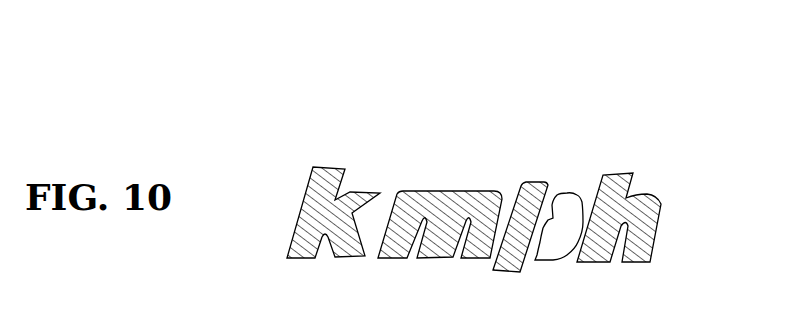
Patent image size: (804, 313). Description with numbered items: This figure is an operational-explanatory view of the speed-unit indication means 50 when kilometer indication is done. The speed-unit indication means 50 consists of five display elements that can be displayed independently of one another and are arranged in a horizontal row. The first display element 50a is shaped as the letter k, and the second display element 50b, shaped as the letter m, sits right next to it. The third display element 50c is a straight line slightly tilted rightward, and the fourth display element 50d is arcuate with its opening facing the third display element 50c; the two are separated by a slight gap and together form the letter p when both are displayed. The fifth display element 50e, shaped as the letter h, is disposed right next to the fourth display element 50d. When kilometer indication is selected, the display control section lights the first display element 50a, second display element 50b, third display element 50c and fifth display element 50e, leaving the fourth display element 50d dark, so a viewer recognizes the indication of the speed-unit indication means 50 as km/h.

The speed-unit indication means 50 is at (309, 124).
The first display element 50a is at (338, 170).
The second display element 50b is at (453, 191).
The third display element 50c is at (533, 183).
The fourth display element 50d is at (567, 194).
The fifth display element 50e is at (651, 196).